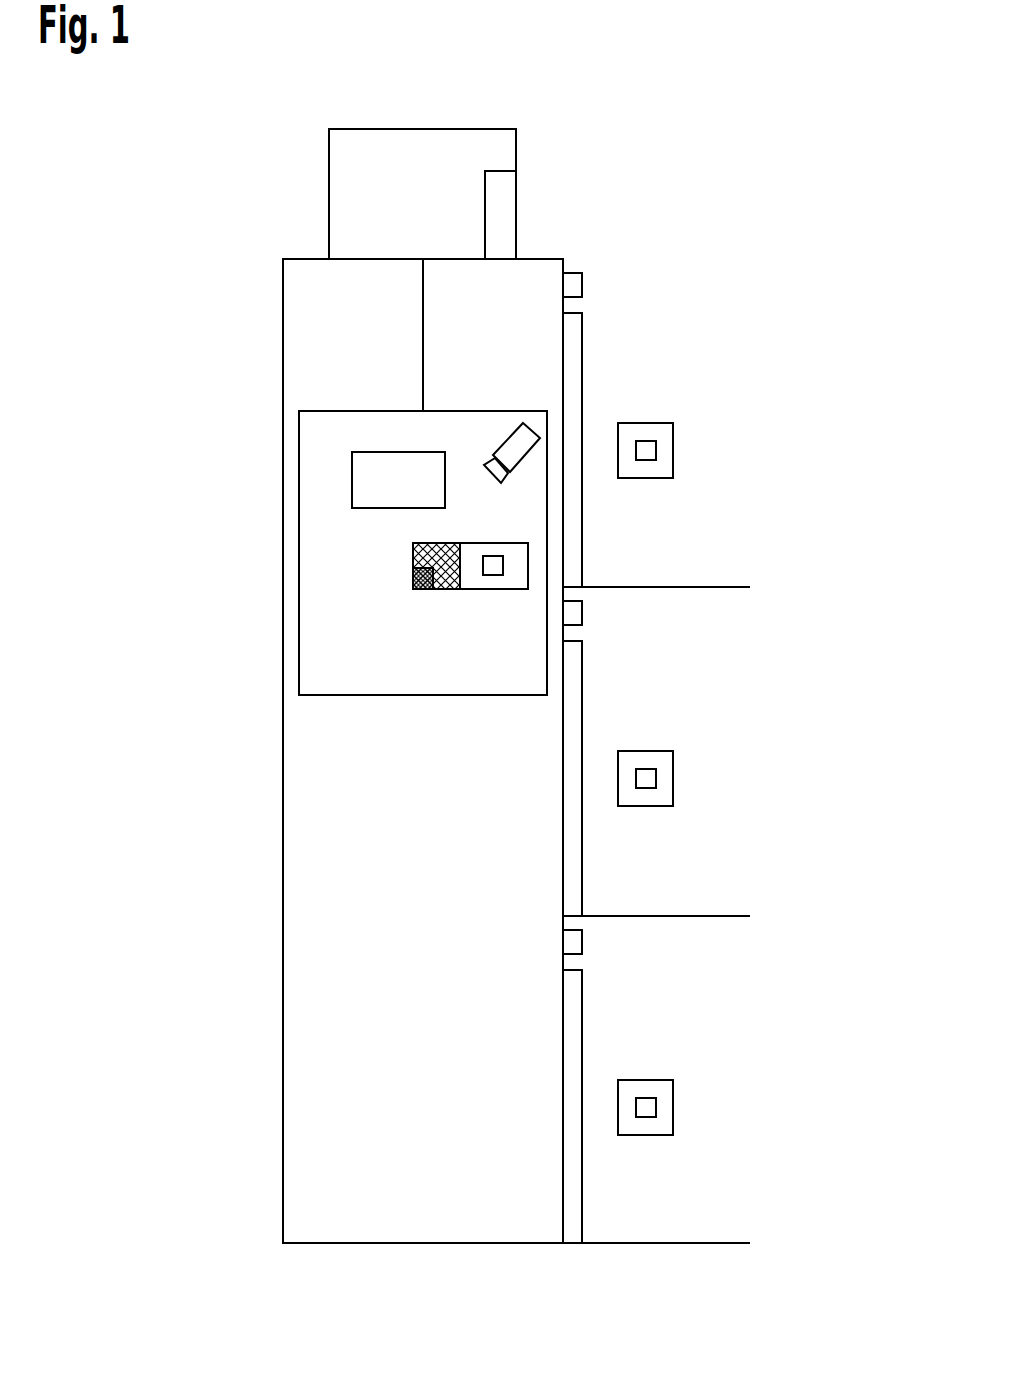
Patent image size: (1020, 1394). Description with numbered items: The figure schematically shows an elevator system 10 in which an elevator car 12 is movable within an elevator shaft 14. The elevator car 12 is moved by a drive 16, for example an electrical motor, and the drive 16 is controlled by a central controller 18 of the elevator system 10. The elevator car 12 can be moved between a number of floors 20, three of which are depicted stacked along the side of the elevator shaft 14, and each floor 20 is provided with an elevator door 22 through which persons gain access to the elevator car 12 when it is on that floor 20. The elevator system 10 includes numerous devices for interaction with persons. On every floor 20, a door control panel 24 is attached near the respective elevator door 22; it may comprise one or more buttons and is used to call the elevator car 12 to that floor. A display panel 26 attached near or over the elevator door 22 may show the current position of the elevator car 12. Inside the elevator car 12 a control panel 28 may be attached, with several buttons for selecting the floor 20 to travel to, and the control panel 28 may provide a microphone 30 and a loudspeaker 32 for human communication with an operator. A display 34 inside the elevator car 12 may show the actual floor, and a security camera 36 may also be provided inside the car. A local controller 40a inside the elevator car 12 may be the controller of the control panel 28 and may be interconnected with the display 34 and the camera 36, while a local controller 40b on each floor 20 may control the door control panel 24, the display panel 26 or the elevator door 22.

The elevator system 10 is at (670, 118).
The elevator car 12 is at (299, 512).
The elevator shaft 14 is at (283, 1033).
The drive 16 is at (397, 129).
The central controller 18 is at (517, 213).
The floor 20 is at (734, 384).
The elevator door 22 is at (582, 354).
The door control panel 24 is at (673, 449).
The display panel 26 is at (582, 287).
The control panel 28 is at (515, 589).
The microphone 30 is at (421, 589).
The loudspeaker 32 is at (413, 553).
The display 34 is at (352, 475).
The security camera 36 is at (507, 437).
The local controller 40a is at (495, 589).
The local controller 40b is at (646, 460).